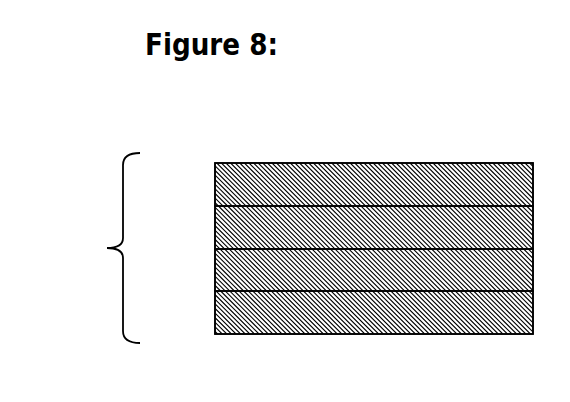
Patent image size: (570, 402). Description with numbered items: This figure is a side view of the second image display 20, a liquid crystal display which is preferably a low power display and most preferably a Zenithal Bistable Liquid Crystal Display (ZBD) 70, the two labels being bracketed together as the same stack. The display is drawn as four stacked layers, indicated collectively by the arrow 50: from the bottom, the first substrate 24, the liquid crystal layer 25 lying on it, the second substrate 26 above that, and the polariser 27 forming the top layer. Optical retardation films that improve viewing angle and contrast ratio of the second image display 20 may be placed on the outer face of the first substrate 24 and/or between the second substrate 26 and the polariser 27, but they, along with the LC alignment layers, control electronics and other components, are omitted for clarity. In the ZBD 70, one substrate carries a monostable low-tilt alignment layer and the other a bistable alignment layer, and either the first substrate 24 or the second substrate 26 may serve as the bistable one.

The layered structure / stack 50 is at (306, 206).
The polariser 27 is at (248, 185).
The second substrate 26 is at (248, 229).
The liquid crystal layer 25 is at (248, 269).
The first substrate 24 is at (248, 311).
The second image display 20 is at (86, 248).
The Zenithal Bistable Liquid Crystal Display (ZBD) 70 is at (86, 248).